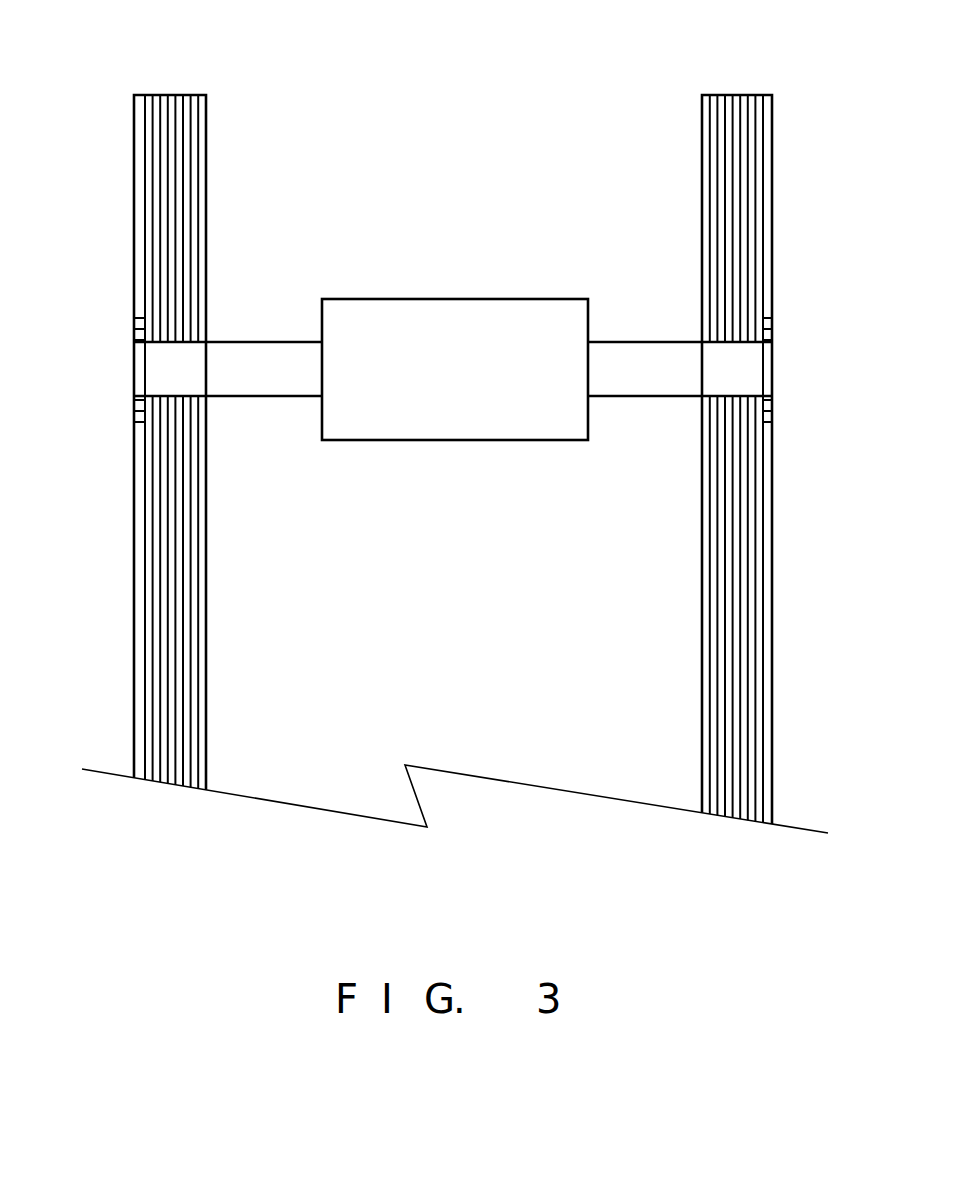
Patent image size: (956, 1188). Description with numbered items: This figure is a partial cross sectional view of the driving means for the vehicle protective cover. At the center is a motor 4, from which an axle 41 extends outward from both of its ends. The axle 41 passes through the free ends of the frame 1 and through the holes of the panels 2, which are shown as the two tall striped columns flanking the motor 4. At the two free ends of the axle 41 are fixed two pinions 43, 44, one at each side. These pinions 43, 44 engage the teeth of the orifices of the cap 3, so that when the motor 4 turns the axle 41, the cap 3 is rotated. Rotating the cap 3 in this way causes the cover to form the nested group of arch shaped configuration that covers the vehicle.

The frame 1 is at (448, 459).
The panels 2 is at (172, 140).
The cap 3 is at (143, 217).
The motor 4 is at (445, 408).
The axle 41 is at (270, 372).
The pinion 43 is at (137, 412).
The pinion 44 is at (772, 413).